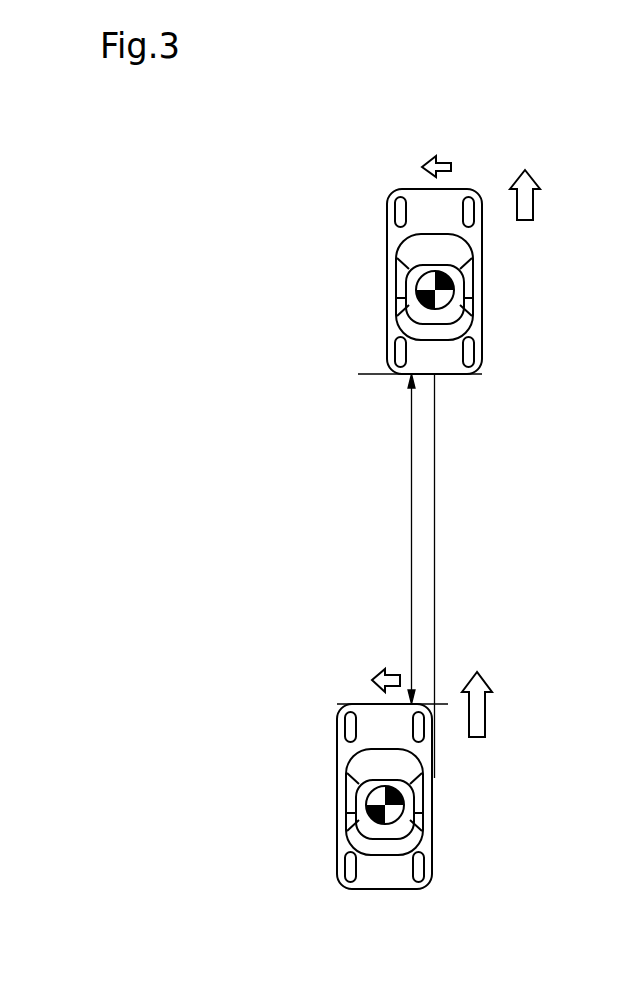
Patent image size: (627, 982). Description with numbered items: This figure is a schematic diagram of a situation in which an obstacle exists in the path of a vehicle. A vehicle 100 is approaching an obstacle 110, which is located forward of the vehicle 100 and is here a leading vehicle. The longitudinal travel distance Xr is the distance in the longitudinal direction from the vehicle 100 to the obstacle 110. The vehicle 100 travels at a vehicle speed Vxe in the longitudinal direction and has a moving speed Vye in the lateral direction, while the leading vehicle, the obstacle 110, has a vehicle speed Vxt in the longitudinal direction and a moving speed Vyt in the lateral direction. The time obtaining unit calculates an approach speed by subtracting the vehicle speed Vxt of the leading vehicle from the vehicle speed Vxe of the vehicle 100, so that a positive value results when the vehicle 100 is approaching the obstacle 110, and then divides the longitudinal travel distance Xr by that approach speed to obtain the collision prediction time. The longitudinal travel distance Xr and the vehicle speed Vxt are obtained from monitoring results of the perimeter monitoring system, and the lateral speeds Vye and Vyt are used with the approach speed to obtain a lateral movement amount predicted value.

The vehicle 100 is at (432, 815).
The obstacle 110 is at (482, 300).
The longitudinal travel distance Xr is at (412, 571).
The vehicle speed of the leading vehicle Vxt is at (533, 202).
The moving speed in the lateral direction of the obstacle Vyt is at (432, 149).
The vehicle speed of the vehicle Vxe is at (485, 705).
The moving speed in the lateral direction of the vehicle Vye is at (383, 666).